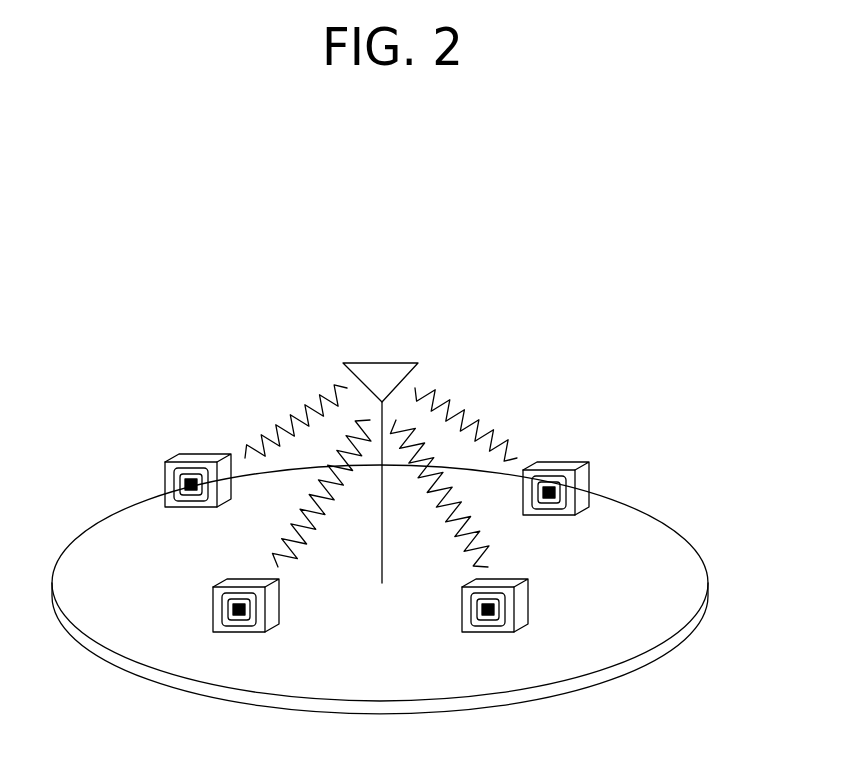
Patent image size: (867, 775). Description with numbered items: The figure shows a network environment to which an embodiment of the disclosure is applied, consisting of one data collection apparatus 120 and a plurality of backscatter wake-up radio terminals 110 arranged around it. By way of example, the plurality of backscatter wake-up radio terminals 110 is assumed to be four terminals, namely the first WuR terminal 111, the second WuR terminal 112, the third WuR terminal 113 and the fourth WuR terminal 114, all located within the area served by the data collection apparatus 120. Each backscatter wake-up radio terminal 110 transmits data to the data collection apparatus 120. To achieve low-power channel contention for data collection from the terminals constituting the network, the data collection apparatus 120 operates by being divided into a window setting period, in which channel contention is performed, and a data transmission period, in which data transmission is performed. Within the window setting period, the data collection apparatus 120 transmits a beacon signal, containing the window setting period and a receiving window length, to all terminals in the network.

The backscatter wake-up radio terminals 110 is at (712, 445).
The WuR terminal 1 111 is at (196, 505).
The WuR terminal 2 112 is at (246, 619).
The WuR terminal 3 113 is at (495, 620).
The WuR terminal 4 114 is at (558, 516).
The data collection apparatus 120 is at (381, 459).